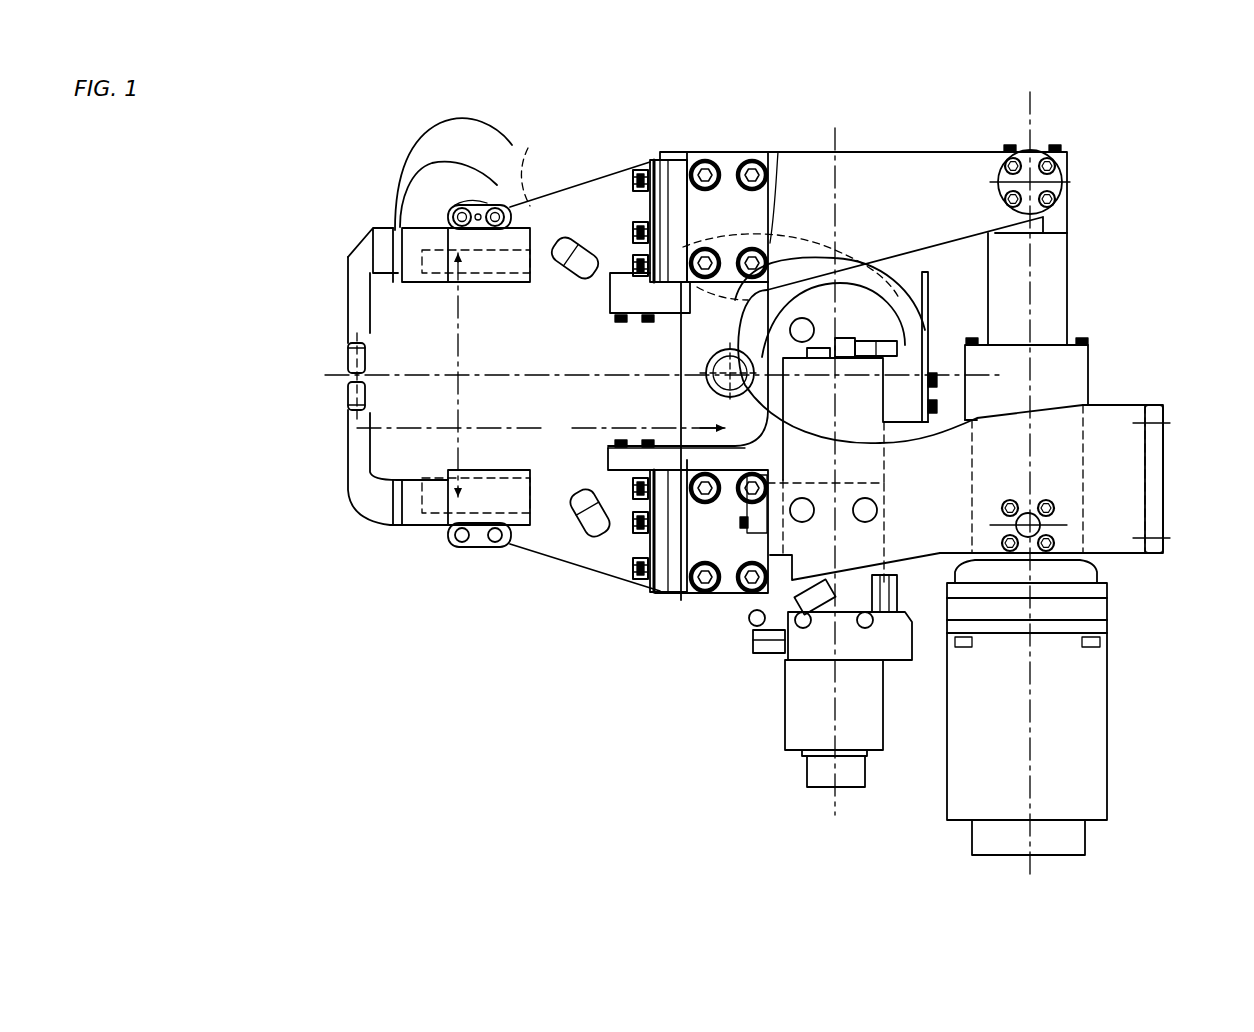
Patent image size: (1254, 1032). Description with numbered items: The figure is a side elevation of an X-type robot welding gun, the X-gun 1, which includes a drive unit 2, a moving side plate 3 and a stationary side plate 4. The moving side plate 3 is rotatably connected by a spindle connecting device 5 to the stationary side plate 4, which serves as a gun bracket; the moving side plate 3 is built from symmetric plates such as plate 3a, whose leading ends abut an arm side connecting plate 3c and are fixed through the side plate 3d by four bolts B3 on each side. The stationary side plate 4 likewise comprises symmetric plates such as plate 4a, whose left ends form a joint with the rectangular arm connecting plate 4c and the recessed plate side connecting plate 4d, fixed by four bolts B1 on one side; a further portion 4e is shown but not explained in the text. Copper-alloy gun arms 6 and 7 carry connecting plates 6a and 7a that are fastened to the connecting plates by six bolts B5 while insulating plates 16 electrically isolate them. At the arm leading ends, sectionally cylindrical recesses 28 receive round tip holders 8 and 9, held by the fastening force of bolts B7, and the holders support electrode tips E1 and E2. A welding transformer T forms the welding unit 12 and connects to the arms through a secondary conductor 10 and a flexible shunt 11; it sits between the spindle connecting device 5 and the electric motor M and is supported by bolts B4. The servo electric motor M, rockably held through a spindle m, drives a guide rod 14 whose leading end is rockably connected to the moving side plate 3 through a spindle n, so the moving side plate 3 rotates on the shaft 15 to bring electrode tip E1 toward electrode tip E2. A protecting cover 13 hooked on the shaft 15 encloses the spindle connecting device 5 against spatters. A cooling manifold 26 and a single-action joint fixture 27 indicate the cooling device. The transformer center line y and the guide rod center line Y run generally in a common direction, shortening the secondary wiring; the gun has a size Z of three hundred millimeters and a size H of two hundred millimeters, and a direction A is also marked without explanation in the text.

The X-gun 1 is at (975, 128).
The drive unit 2 is at (1105, 321).
The moving side plate 3 is at (940, 150).
The plate 3a is at (867, 152).
The arm side connecting plate 3c is at (675, 152).
The side plate 3d is at (727, 152).
The stationary side plate 4 is at (1115, 403).
The plate 4a is at (1127, 417).
The arm connecting plate 4c is at (677, 593).
The plate side connecting plate 4d is at (727, 593).
The gear case flange 4e is at (1157, 505).
The spindle connecting device 5 is at (707, 355).
The gun arm 6 is at (537, 280).
The connecting plate 6a is at (648, 158).
The gun arm 7 is at (537, 470).
The connecting plate 7a is at (650, 591).
The tip holder 8 is at (473, 138).
The tip holder 9 is at (410, 480).
The secondary conductor 10 is at (617, 458).
The flexible shunt 11 is at (880, 277).
The welding unit 12 is at (782, 737).
The protecting cover 13 is at (693, 403).
The guide rod 14 is at (1062, 268).
The shaft 15 is at (683, 387).
The insulating plate 16 is at (660, 155).
The cooling manifold 26 is at (890, 657).
The single-action joint fixture 27 is at (575, 245).
The sectionally cylindrical recess 28 is at (458, 604).
The bolts B1 is at (747, 567).
The bolts B3 is at (757, 155).
The bolts B4 is at (860, 505).
The bolts B5 is at (632, 178).
The bolts B7 is at (487, 205).
The electrode tip E1 is at (346, 360).
The electrode tip E2 is at (342, 392).
The size H is at (457, 375).
The size Z is at (541, 432).
The direction A is at (757, 335).
The electric motor M is at (1102, 714).
The spindle m is at (1040, 525).
The spindle n is at (1050, 182).
The welding transformer T is at (797, 705).
The longitudinal center line y- y is at (834, 470).
The axial center line Y- Y is at (1027, 496).